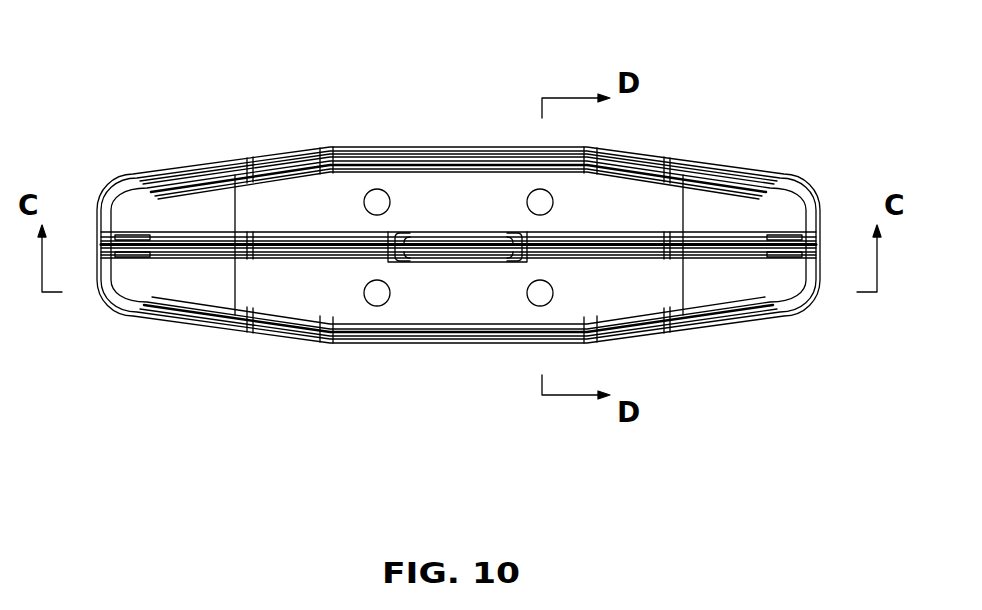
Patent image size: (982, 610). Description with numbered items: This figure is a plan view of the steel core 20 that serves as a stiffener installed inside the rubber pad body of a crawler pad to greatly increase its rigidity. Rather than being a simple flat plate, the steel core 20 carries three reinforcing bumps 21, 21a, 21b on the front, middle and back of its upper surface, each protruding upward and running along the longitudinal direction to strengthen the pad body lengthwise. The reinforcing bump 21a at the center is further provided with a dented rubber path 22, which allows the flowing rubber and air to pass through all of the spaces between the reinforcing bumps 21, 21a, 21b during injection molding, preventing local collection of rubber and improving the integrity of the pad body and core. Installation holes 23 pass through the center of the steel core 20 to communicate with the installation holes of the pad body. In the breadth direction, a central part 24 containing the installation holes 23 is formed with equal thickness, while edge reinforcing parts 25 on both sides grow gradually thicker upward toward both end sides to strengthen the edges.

The steel core 20 is at (344, 115).
The reinforcing bump 21 is at (490, 343).
The reinforcing bump 21a is at (637, 232).
The reinforcing bump 21b is at (493, 148).
The rubber path 22 is at (454, 258).
The installation holes 23 is at (545, 293).
The central part 24 is at (322, 293).
The edge reinforcing parts 25 is at (175, 218).